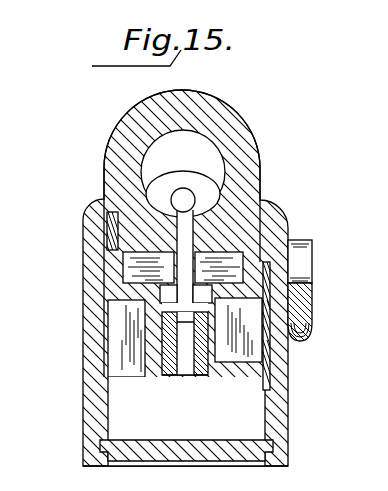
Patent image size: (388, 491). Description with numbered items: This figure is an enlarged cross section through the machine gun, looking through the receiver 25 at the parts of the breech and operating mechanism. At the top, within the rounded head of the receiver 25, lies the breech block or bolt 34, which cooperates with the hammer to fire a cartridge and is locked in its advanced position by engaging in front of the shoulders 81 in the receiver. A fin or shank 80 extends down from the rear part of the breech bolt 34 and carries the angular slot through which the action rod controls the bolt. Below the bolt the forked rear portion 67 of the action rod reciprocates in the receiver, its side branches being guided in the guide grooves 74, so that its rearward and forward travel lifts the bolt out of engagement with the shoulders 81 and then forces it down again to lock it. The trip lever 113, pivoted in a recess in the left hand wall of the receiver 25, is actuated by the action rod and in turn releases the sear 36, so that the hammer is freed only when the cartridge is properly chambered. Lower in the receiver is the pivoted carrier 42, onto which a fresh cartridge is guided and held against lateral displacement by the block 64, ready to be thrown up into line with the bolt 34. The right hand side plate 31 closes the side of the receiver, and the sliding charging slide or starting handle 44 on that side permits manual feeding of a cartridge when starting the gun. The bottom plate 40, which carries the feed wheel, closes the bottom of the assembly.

The receiver 25 is at (131, 121).
The breech block or bolt 34 is at (203, 183).
The shoulders 81 is at (170, 218).
The guide grooves 74 is at (248, 262).
The fin or shank 80 is at (315, 260).
The charging slide or starting handle 44 is at (308, 307).
The trip lever 113 is at (110, 233).
The forked rear portion 67 is at (134, 271).
The block 64 is at (237, 357).
The carrier 42 is at (168, 381).
The sear 36 is at (83, 410).
The right hand side plate 31 is at (290, 402).
The bottom plate 40 is at (152, 458).